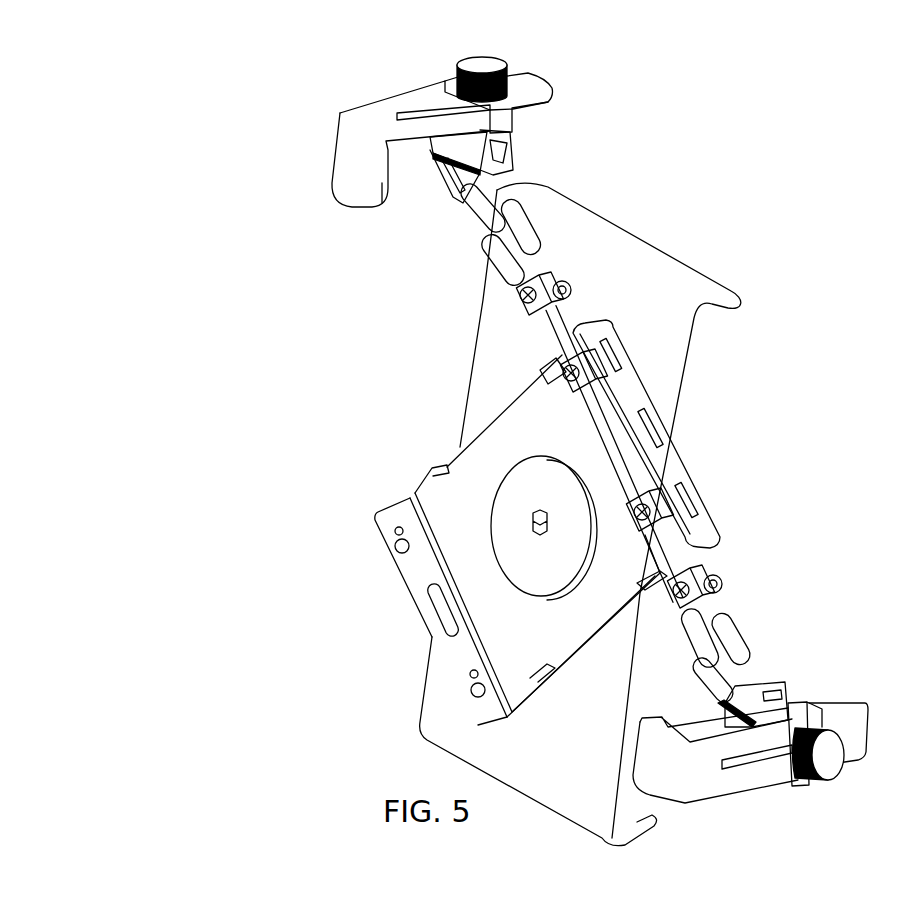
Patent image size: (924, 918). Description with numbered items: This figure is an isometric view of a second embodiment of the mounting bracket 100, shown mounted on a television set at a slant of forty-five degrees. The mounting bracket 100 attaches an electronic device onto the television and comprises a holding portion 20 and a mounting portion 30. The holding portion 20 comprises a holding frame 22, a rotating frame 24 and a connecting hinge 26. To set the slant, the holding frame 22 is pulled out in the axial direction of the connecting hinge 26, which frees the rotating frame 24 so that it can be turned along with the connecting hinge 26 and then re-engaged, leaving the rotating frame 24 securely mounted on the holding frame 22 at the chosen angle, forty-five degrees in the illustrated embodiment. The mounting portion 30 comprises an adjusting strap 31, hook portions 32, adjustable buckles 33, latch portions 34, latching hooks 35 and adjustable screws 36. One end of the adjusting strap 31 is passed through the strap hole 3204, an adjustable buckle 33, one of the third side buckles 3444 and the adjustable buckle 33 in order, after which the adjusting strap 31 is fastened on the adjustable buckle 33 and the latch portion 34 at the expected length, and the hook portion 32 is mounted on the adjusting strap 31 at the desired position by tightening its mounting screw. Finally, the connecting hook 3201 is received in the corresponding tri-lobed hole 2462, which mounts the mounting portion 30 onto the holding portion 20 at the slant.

The mounting bracket 100 is at (641, 57).
The holding portion 20 is at (248, 540).
The holding frame 22 is at (440, 685).
The rotating frame 24 is at (463, 502).
The connecting hinge 26 is at (527, 527).
The tri-lobed hole 2462 is at (477, 693).
The mounting portion 30 is at (210, 336).
The adjusting strap 31 is at (562, 333).
The hook portion 32 is at (520, 274).
The adjustable buckle 33 is at (515, 226).
The latch portion 34 is at (470, 142).
The latching hook 35 is at (347, 112).
The adjustable screw 36 is at (462, 64).
The connecting hook 3201 is at (717, 578).
The strap hole 3204 is at (665, 516).
The third side buckle 3444 is at (737, 707).